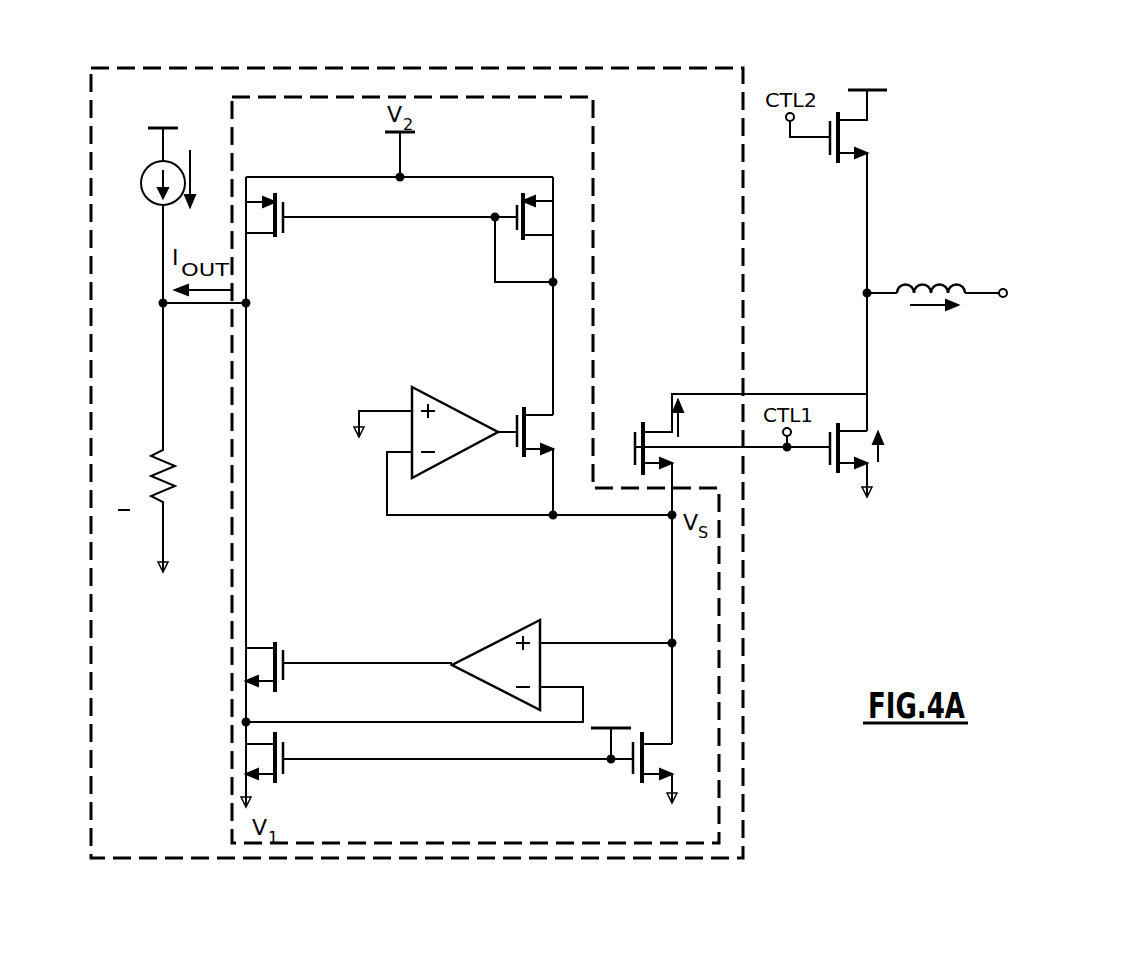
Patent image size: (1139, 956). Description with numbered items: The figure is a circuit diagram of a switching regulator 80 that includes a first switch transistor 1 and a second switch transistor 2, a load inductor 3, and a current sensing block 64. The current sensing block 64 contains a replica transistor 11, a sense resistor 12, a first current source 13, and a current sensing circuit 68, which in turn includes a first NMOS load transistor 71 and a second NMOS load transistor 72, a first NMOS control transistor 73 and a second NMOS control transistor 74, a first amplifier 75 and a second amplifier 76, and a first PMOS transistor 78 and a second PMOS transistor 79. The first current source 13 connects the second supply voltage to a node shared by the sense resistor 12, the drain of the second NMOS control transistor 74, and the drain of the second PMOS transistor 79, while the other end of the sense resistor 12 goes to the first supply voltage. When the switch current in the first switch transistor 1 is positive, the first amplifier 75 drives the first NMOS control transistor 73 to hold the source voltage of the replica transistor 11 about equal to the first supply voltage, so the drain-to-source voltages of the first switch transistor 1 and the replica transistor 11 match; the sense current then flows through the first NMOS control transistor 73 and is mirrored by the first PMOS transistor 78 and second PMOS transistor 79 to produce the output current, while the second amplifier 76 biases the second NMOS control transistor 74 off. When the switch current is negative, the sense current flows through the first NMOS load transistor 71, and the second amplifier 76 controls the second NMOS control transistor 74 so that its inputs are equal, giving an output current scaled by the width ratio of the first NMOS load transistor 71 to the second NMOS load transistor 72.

The current sensing block 64 is at (150, 68).
The current sensing circuit 68 is at (265, 97).
The first current source 13 is at (144, 170).
The sense resistor 12 is at (188, 460).
The second PMOS transistor 79 is at (283, 240).
The first PMOS transistor 78 is at (528, 234).
The first amplifier 75 is at (452, 468).
The first NMOS control transistor 73 is at (528, 443).
The replica transistor 11 is at (632, 445).
The first switch transistor 1 is at (828, 455).
The second switch transistor 2 is at (828, 148).
The load inductor 3 is at (940, 290).
The switching regulator 80 is at (993, 208).
The second NMOS control transistor 74 is at (288, 655).
The second amplifier 76 is at (490, 688).
The second NMOS load transistor 72 is at (290, 777).
The first NMOS load transistor 71 is at (632, 776).